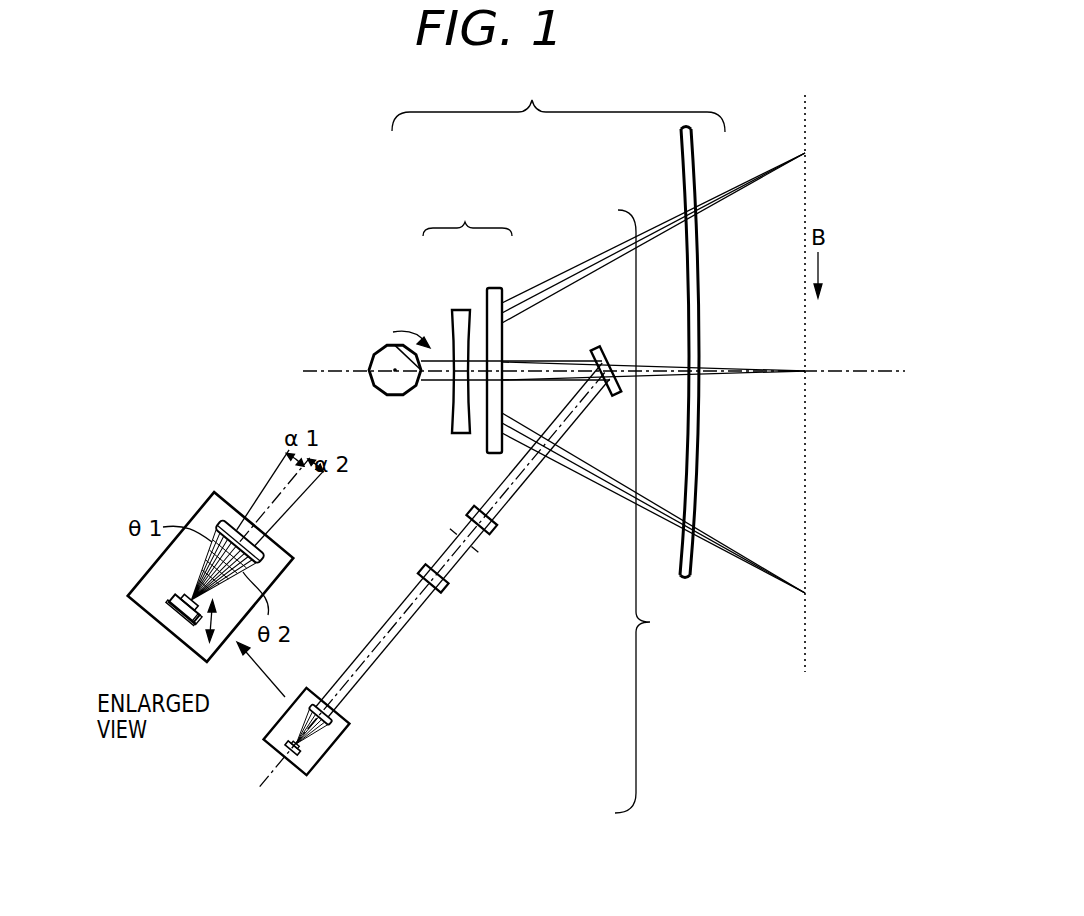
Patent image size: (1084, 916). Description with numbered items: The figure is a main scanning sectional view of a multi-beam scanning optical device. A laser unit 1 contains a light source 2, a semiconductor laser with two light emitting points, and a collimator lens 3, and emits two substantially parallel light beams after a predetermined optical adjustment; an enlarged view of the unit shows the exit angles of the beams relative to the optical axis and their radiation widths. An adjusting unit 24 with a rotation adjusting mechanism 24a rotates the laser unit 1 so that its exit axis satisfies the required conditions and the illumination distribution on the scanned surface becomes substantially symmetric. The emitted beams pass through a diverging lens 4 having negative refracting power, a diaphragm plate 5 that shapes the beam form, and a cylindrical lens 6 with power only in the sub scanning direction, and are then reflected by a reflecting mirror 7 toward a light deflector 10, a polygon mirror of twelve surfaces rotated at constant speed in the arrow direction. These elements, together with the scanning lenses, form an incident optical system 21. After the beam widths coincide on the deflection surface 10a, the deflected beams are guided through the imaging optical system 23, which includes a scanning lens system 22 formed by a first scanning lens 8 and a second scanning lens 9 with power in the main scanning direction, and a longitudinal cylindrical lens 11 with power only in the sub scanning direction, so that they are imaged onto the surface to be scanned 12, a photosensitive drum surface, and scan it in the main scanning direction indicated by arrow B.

The laser unit 1 is at (314, 767).
The light source 2 is at (172, 600).
The collimator lens 3 is at (313, 700).
The diverging lens 4 is at (424, 567).
The diaphragm plate 5 is at (451, 528).
The cylindrical lens 6 is at (493, 527).
The reflecting mirror 7 is at (606, 354).
The first scanning lens 8 is at (458, 311).
The second scanning lens 9 is at (493, 289).
The light deflector 10 is at (360, 337).
The deflection surface 10a is at (394, 347).
The longitudinal cylindrical lens 11 is at (682, 144).
The surface to be scanned 12 is at (808, 118).
The incident optical system 21 is at (651, 511).
The scanning lens system 22 is at (467, 217).
The imaging optical system 23 is at (558, 103).
The adjusting unit 24 is at (197, 623).
The rotation adjusting mechanism 24a is at (201, 626).